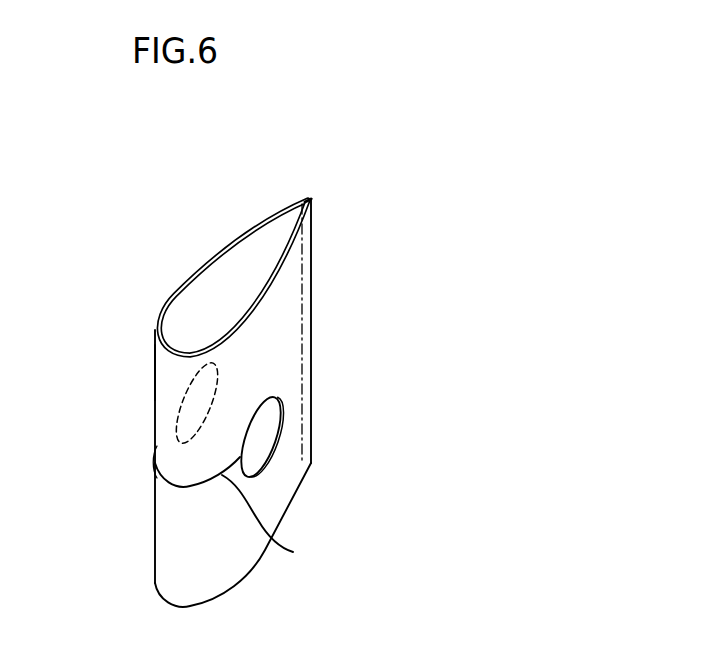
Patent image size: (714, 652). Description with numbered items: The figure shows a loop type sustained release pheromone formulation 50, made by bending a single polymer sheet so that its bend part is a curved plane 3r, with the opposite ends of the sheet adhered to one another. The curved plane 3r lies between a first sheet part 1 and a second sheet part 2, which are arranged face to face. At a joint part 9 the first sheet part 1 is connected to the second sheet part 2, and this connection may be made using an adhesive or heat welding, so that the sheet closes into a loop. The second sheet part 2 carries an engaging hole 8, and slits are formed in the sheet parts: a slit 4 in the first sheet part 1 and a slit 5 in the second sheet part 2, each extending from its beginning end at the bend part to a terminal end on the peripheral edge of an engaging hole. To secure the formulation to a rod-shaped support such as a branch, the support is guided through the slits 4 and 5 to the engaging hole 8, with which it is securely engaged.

The loop type sustained release pheromone formulation 50 is at (158, 238).
The first sheet part 1 is at (250, 253).
The second sheet part 2 is at (287, 280).
The joint part 9 is at (308, 200).
The curved plane 3r is at (168, 372).
The slit 4 is at (180, 441).
The engaging hole 8 is at (278, 435).
The slit 5 is at (270, 523).